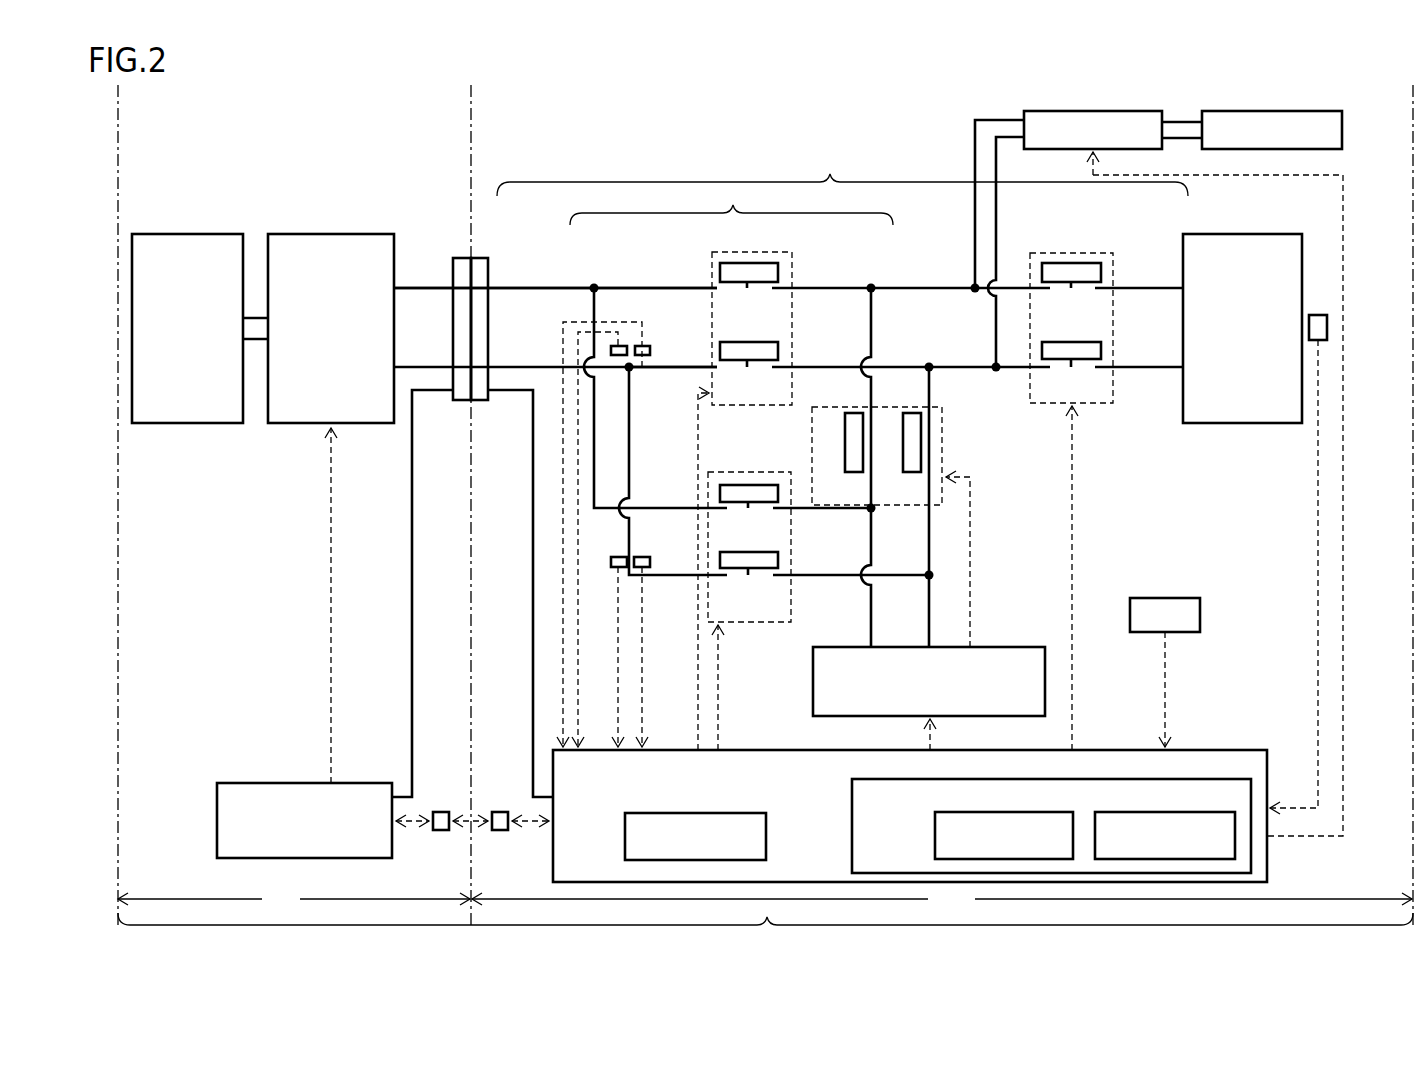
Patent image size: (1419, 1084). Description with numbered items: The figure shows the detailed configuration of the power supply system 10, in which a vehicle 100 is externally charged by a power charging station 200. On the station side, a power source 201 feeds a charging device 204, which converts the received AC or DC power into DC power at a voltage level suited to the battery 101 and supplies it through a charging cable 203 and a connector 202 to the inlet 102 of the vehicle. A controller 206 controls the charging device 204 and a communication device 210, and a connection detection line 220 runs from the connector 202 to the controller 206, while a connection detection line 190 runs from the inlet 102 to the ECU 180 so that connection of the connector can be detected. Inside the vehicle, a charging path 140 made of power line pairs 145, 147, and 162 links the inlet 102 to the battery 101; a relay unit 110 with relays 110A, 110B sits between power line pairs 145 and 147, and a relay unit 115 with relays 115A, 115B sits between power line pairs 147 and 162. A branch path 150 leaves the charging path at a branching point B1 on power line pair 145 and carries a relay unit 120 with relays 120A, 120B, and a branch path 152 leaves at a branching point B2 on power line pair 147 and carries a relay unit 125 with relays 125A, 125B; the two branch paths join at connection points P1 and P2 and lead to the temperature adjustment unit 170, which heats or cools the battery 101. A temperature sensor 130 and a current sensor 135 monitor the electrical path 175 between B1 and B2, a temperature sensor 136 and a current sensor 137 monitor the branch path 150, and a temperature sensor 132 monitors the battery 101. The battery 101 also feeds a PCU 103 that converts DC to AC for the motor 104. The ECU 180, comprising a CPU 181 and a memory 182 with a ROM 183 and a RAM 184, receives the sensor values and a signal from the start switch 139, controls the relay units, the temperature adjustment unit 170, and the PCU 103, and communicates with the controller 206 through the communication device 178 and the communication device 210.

The power supply system 10 is at (765, 935).
The vehicle 100 is at (942, 899).
The battery 101 is at (1278, 234).
The inlet 102 is at (481, 402).
The PCU 103 is at (1108, 111).
The motor 104 is at (1288, 111).
The relay unit 110 is at (750, 252).
The relay 110A is at (749, 295).
The relay 110B is at (749, 373).
The relay unit 115 is at (1070, 253).
The relay 115A is at (1073, 295).
The relay 115B is at (1073, 373).
The relay unit 120 is at (750, 472).
The relay 120A is at (749, 515).
The relay 120B is at (749, 582).
The relay unit 125 is at (944, 455).
The relay 125A is at (845, 445).
The relay 125B is at (903, 445).
The temperature sensor 130 is at (611, 351).
The temperature sensor 132 is at (1316, 315).
The current sensor 135 is at (645, 357).
The temperature sensor 136 is at (612, 556).
The current sensor 137 is at (643, 556).
The start switch 139 is at (1180, 598).
The charging path 140 is at (842, 174).
The power line pair 145 is at (672, 383).
The power line pair 147 is at (822, 383).
The branch path 150 is at (777, 650).
The branch path 152 is at (855, 384).
The power line pair 162 is at (1142, 383).
The temperature adjustment unit 170 is at (995, 647).
The electrical path 175 is at (731, 204).
The communication device 178 is at (500, 812).
The ECU 180 is at (1213, 751).
The CPU 181 is at (710, 813).
The memory 182 is at (1193, 779).
The ROM 183 is at (1018, 812).
The RAM 184 is at (1180, 812).
The connection detection line 190 is at (531, 578).
The power charging station 200 is at (294, 899).
The power source 201 is at (188, 233).
The connector 202 is at (462, 402).
The charging cable 203 is at (415, 383).
The charging device 204 is at (343, 233).
The controller 206 is at (248, 783).
The communication device 210 is at (441, 812).
The connection detection line 220 is at (414, 578).
The branching point B1 is at (602, 292).
The branching point B2 is at (876, 292).
The connection point P1 is at (866, 514).
The connection point P2 is at (924, 582).